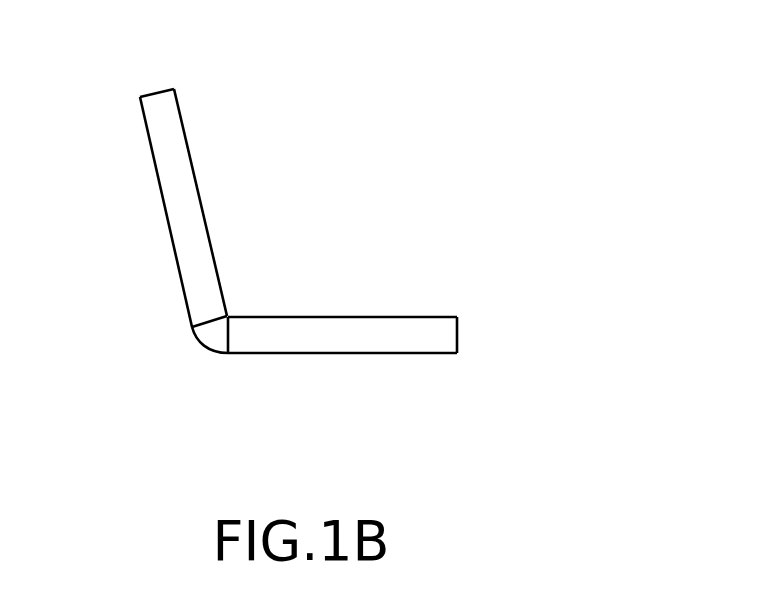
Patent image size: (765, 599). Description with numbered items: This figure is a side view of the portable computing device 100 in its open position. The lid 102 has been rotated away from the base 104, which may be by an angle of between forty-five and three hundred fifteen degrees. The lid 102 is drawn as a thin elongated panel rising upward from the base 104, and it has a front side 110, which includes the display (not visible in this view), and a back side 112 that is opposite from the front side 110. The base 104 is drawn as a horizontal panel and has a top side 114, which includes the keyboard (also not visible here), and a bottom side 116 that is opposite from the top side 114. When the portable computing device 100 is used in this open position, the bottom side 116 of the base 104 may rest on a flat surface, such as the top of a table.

The portable computing device 100 is at (418, 163).
The lid 102 is at (152, 93).
The base 104 is at (458, 330).
The front side 110 is at (190, 158).
The back side 112 is at (161, 192).
The top side 114 is at (310, 317).
The bottom side 116 is at (298, 355).